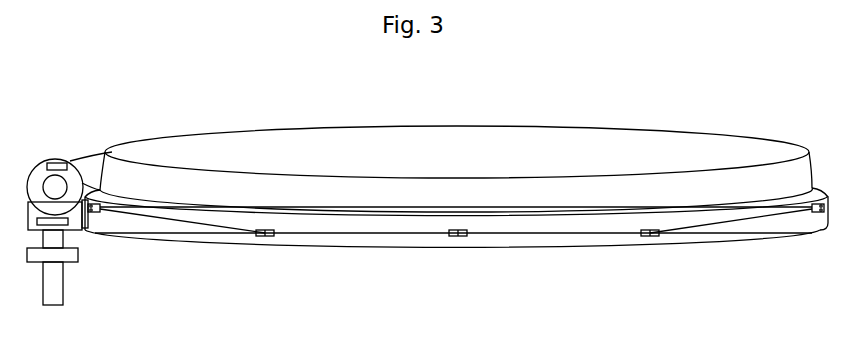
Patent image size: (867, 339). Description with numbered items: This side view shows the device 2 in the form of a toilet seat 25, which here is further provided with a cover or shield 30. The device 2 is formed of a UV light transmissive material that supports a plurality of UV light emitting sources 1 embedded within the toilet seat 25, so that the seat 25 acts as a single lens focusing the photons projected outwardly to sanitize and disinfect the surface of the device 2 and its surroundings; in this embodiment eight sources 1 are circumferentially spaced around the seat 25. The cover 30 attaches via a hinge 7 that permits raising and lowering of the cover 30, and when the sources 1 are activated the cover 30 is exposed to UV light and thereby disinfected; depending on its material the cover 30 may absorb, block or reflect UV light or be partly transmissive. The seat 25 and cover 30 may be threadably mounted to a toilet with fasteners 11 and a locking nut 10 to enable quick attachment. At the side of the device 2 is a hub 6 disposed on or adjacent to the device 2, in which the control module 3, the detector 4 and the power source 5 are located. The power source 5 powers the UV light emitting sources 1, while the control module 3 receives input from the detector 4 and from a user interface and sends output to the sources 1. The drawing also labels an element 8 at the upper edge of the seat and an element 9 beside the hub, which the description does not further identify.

The UV light emitting sources 1 is at (798, 210).
The device 2 is at (603, 104).
The control module 3 is at (29, 218).
The detector 4 is at (48, 155).
The power source 5 is at (35, 187).
The hub 6 is at (77, 176).
The hinge 7 is at (102, 141).
The disc body 8 is at (173, 130).
The bracket 9 is at (80, 236).
The locking nut 10 is at (68, 270).
The fasteners 11 is at (71, 297).
The toilet seat 25 is at (823, 244).
The cover 30 is at (459, 146).